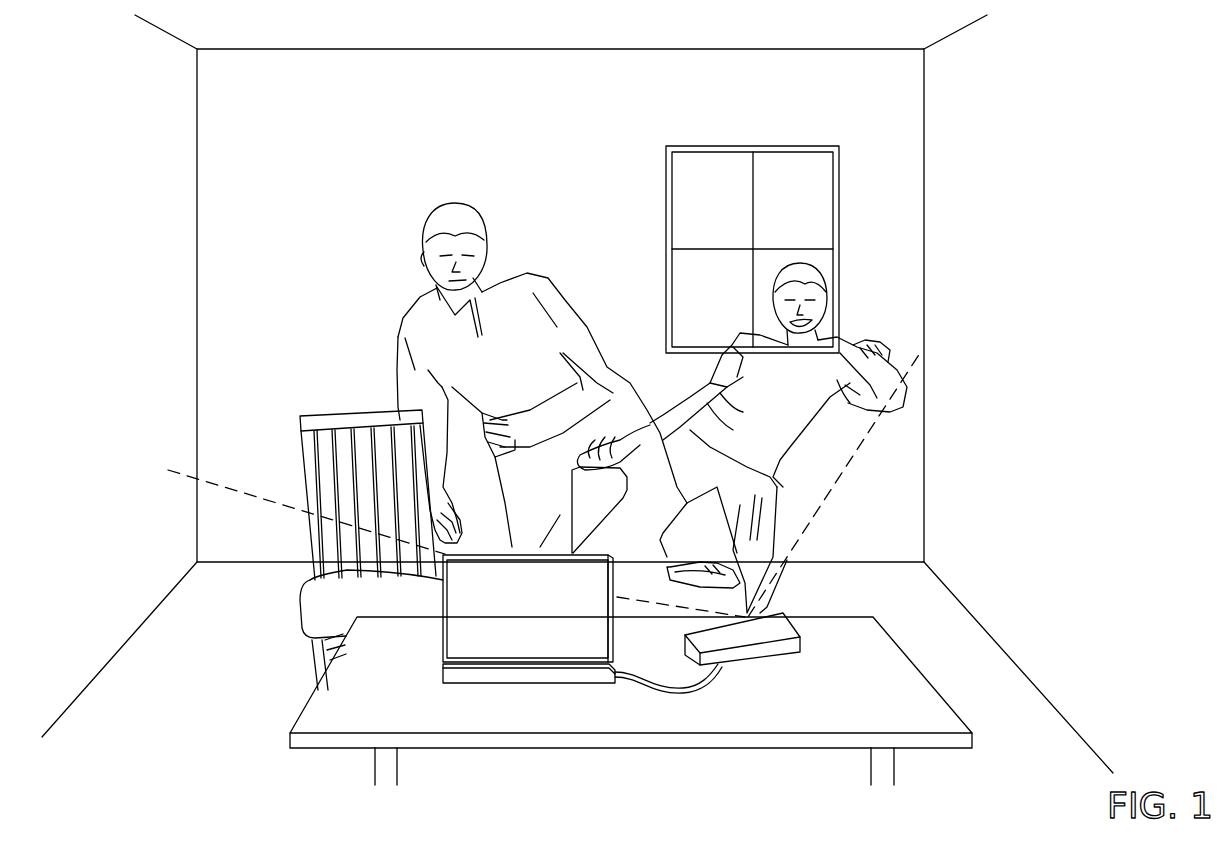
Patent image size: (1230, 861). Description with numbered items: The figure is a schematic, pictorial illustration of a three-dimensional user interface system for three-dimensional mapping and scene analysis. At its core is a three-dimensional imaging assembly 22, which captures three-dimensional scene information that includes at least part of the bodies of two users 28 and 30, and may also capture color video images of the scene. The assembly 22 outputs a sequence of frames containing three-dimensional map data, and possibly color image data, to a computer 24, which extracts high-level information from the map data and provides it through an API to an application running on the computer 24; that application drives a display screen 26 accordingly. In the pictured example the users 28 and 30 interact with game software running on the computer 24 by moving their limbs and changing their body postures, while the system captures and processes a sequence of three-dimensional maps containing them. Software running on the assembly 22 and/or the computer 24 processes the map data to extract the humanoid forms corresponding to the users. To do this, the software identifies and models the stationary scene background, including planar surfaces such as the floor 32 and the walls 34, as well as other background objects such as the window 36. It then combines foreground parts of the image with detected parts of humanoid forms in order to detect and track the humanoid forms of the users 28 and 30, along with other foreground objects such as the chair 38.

The 3D imaging assembly 22 is at (800, 628).
The computer 24 is at (443, 674).
The display screen 26 is at (443, 633).
The user 28 is at (500, 272).
The user 30 is at (852, 346).
The floor 32 is at (901, 605).
The walls 34 is at (197, 92).
The window 36 is at (693, 146).
The chair 38 is at (322, 411).